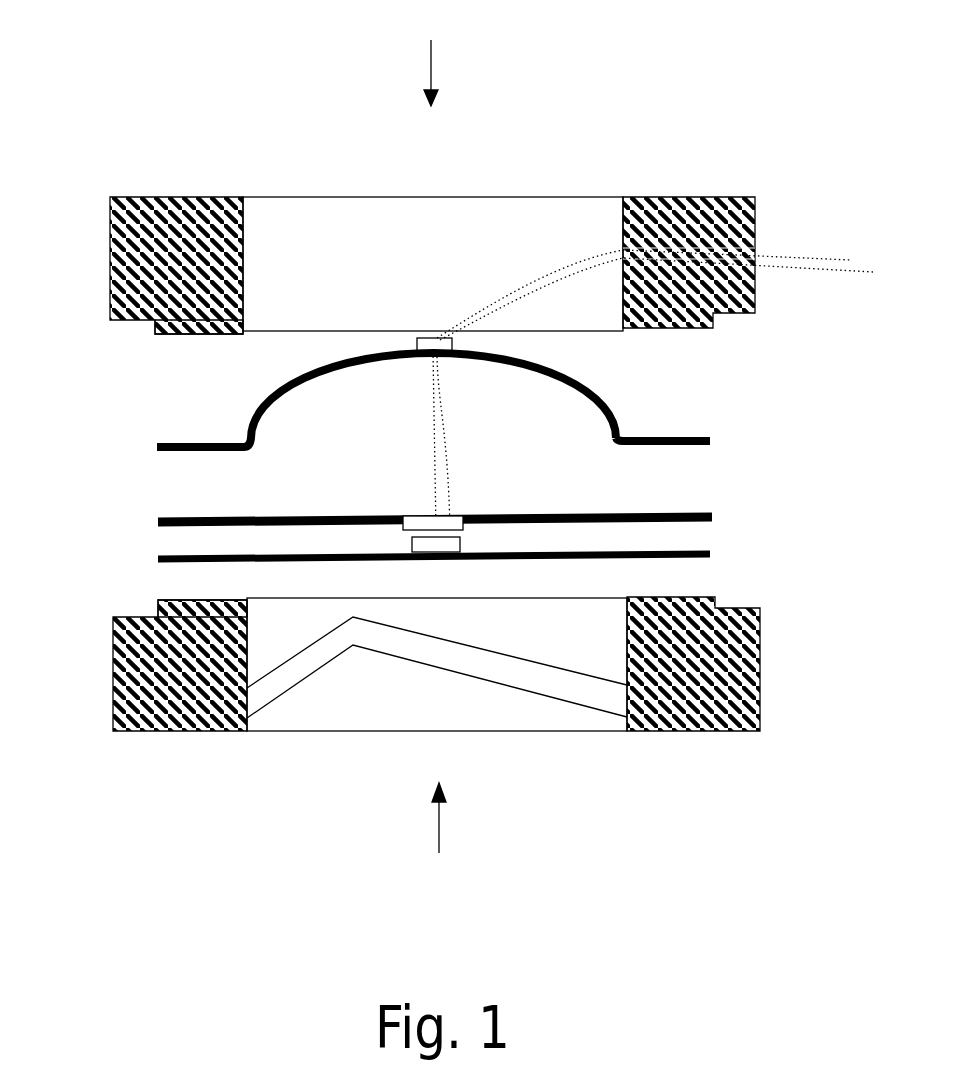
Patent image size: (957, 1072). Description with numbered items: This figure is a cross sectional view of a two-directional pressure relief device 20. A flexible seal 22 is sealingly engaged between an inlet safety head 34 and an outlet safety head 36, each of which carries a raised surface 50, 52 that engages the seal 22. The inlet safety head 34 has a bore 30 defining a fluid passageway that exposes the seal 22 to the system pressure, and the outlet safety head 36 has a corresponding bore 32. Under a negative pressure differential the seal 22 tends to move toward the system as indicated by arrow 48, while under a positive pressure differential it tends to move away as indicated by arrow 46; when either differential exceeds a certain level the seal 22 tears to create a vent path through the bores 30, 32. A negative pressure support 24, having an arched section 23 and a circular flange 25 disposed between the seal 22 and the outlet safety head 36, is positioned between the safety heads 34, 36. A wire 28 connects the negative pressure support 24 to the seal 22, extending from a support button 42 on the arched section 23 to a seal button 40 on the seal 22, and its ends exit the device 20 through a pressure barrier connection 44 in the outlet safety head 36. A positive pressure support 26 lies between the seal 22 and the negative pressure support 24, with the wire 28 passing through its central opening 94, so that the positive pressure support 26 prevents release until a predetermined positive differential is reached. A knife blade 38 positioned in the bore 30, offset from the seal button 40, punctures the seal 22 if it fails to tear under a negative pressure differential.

The pressure relief device 20 is at (177, 83).
The seal 22 is at (695, 550).
The arched section 23 is at (557, 372).
The negative pressure support 24 is at (476, 395).
The circular flange 25 is at (675, 435).
The positive pressure support 26 is at (650, 512).
The wire 28 is at (787, 263).
The bore 30 is at (444, 721).
The bore 32 is at (367, 251).
The inlet safety head 34 is at (115, 695).
The outlet safety head 36 is at (116, 214).
The knife blade 38 is at (483, 662).
The seal button 40 is at (447, 549).
The support button 42 is at (421, 337).
The pressure barrier connection 44 is at (748, 242).
The arrow 46 is at (439, 838).
The arrow 48 is at (431, 70).
The raised surface 50 is at (172, 600).
The raised surface 52 is at (180, 335).
The central opening 94 is at (452, 513).